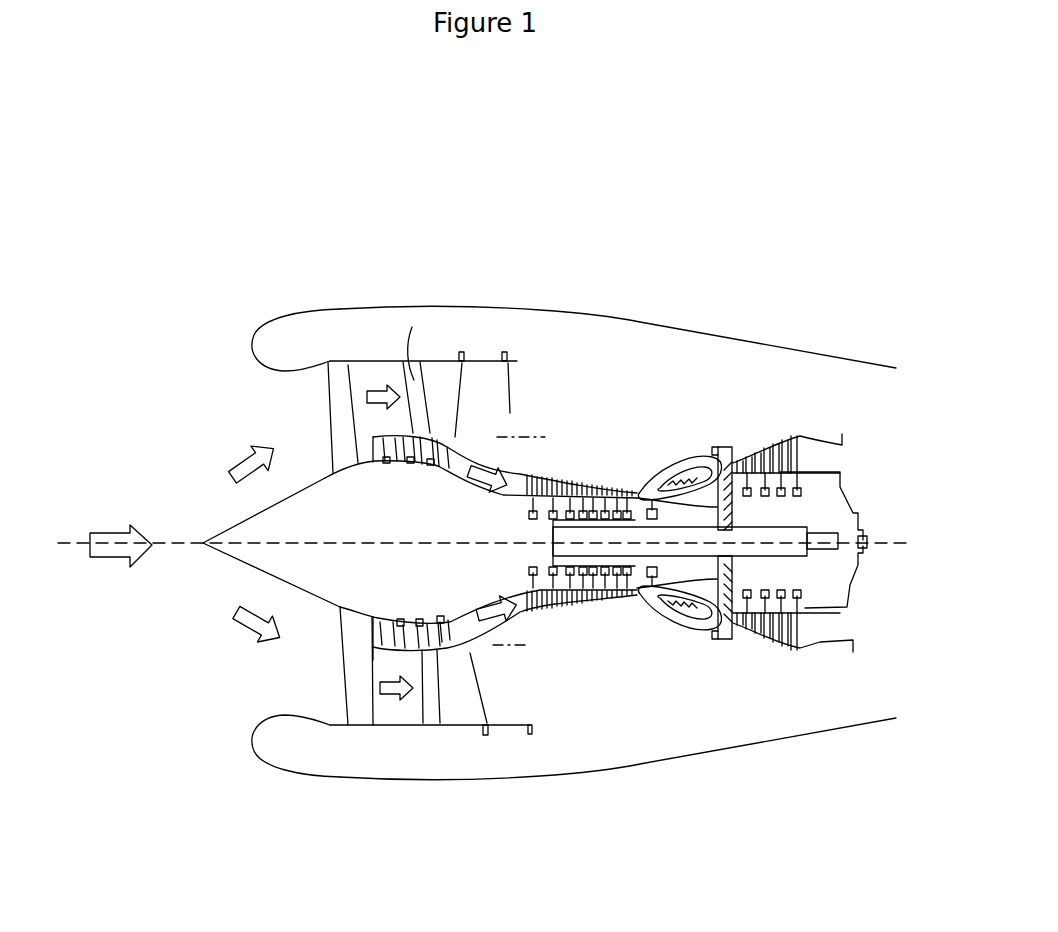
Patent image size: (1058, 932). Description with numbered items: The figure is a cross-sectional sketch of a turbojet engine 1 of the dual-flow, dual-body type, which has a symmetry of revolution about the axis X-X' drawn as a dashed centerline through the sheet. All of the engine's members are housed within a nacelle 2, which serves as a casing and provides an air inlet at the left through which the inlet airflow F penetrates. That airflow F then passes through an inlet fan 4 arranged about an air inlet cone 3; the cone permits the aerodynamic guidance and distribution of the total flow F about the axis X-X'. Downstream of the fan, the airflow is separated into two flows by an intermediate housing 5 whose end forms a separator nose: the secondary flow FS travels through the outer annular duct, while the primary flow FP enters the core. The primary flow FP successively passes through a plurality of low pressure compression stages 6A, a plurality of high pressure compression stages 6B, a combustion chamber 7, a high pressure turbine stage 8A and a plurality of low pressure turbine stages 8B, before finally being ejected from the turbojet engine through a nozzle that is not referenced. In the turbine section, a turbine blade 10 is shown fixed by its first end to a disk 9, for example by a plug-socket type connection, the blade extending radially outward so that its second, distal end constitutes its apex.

The turbojet engine 1 is at (662, 184).
The nacelle 2 is at (731, 356).
The air inlet cone 3 is at (240, 557).
The inlet fan 4 is at (362, 722).
The intermediate housing 5 is at (503, 457).
The low pressure compression stages 6A is at (437, 650).
The high pressure compression stages 6B is at (598, 612).
The combustion chamber 7 is at (693, 625).
The high pressure turbine stage 8A is at (737, 632).
The low pressure turbine stages 8B is at (779, 650).
The disk 9 is at (842, 445).
The turbine blade 10 is at (797, 442).
The inlet airflow F is at (247, 463).
The secondary flow FS is at (378, 390).
The primary flow FP is at (483, 462).
The axis X-X' X is at (79, 505).